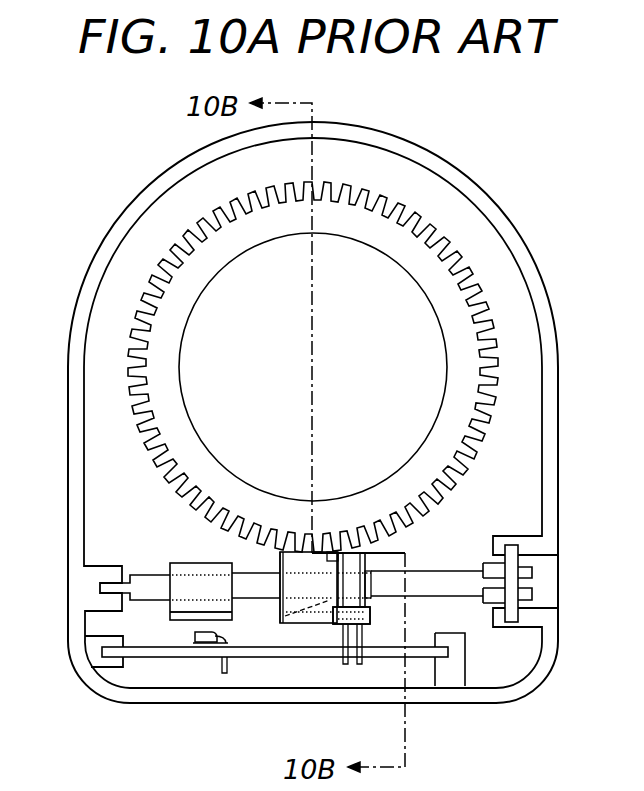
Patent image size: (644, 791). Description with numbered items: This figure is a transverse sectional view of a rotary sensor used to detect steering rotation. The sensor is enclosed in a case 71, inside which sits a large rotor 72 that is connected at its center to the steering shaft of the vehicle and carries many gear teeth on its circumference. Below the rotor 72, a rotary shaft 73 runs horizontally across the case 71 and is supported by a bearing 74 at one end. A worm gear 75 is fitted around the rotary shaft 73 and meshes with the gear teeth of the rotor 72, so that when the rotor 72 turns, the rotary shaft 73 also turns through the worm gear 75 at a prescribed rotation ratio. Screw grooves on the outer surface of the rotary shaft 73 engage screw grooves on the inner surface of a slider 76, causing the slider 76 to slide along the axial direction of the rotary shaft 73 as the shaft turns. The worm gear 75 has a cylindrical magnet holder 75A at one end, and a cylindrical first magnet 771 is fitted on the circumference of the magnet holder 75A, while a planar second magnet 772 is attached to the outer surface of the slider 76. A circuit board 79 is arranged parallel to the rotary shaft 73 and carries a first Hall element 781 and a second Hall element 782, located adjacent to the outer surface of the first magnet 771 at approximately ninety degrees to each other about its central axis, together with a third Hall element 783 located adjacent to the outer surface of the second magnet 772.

The case 71 is at (495, 197).
The rotor 72 is at (460, 302).
The rotary shaft 73 is at (254, 583).
The bearing 74 is at (512, 556).
The worm gear 75 is at (284, 624).
The magnet holder 75A is at (283, 612).
The slider 76 is at (170, 607).
The first magnet 771 is at (363, 558).
The second magnet 772 is at (190, 615).
The first Hall element 781 is at (335, 615).
The second Hall element 782 is at (335, 615).
The third Hall element 783 is at (200, 643).
The circuit board 79 is at (423, 645).